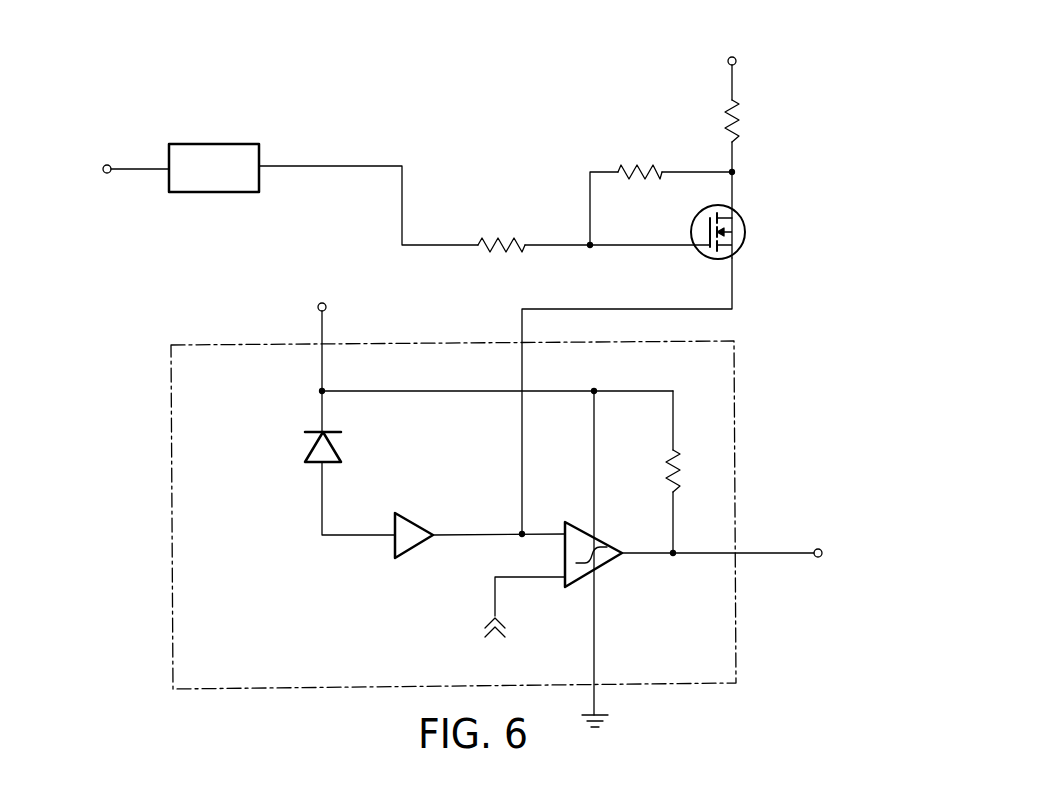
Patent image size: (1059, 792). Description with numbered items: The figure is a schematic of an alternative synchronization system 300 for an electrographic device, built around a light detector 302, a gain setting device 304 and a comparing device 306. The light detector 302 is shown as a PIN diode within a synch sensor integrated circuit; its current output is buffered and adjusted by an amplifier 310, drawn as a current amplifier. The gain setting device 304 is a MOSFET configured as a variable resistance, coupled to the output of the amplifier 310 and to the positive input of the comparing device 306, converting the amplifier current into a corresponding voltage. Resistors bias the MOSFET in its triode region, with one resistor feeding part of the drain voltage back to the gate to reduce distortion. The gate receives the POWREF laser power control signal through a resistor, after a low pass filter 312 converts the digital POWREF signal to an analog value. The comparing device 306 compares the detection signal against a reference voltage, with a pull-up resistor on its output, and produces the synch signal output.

The synchronization system 300 is at (117, 106).
The low pass filter 312 is at (222, 192).
The gain setting device 304 is at (763, 247).
The light detector 302 is at (288, 419).
The amplifier 310 is at (416, 518).
The comparing device 306 is at (602, 566).